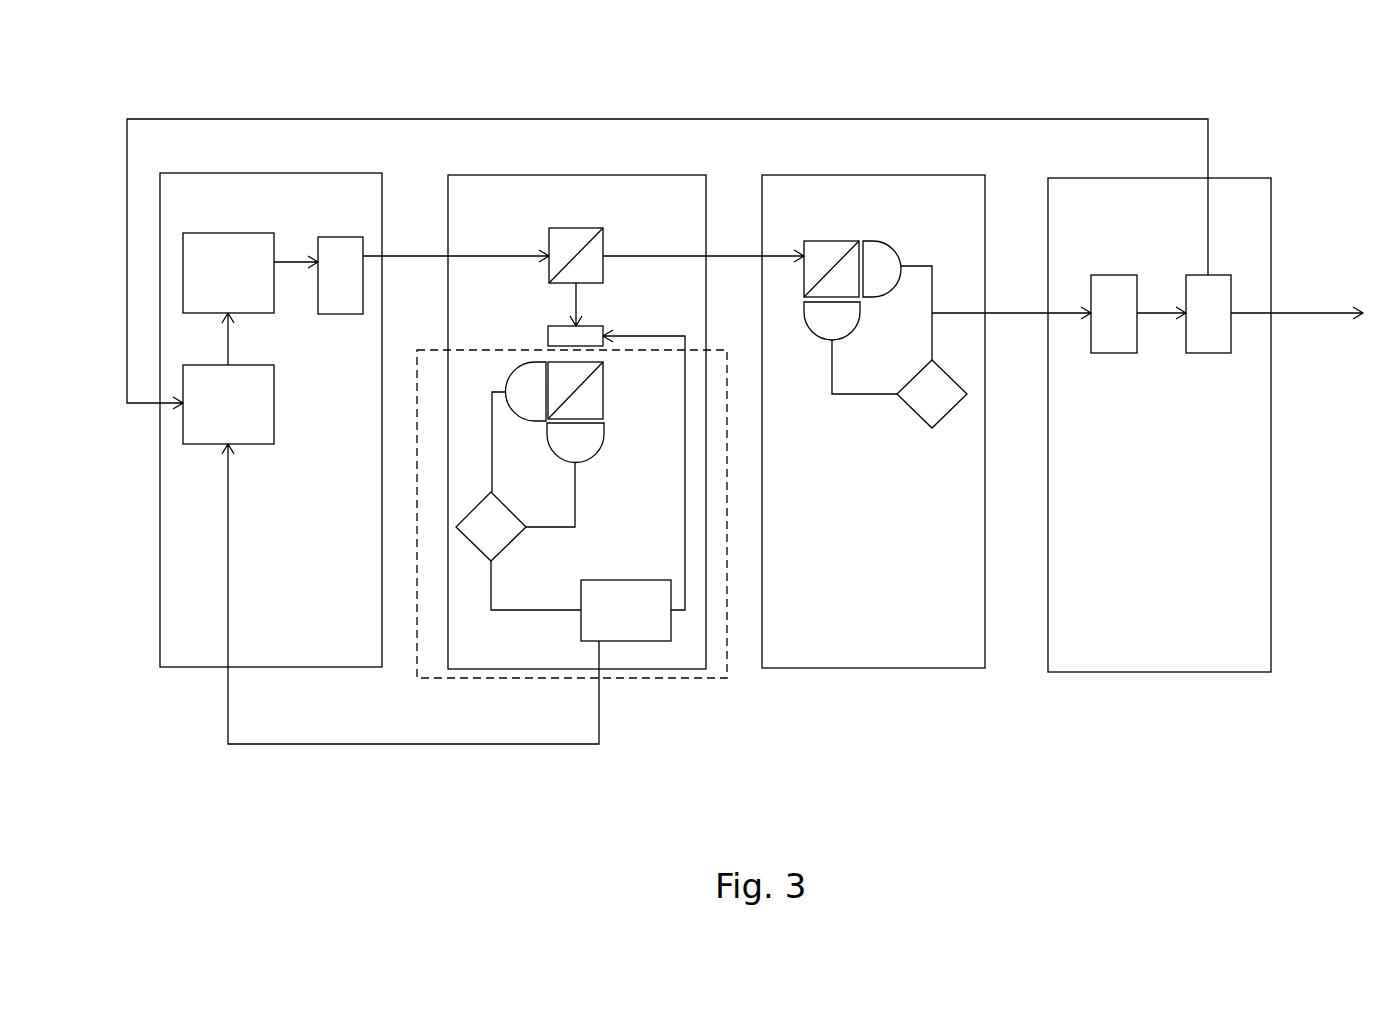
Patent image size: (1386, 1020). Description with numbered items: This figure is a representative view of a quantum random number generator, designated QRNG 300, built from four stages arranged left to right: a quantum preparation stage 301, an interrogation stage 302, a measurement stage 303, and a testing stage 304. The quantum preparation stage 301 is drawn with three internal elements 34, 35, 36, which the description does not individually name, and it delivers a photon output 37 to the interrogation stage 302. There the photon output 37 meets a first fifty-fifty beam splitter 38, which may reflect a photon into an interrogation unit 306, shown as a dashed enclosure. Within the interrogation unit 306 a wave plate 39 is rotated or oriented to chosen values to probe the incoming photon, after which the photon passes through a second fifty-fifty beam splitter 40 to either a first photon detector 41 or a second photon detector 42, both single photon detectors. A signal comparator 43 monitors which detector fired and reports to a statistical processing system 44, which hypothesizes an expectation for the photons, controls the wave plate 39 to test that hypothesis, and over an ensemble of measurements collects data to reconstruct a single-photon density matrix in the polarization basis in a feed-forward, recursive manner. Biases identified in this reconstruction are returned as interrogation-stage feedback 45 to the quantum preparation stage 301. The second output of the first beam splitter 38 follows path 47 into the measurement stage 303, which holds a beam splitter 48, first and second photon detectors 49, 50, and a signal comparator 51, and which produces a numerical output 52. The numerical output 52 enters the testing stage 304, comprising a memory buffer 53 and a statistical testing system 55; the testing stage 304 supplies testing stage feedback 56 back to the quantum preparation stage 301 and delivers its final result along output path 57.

The QRNG 300 is at (1244, 103).
The quantum preparation stage 301 is at (183, 667).
The interrogation stage 302 is at (642, 669).
The measurement stage 303 is at (883, 668).
The testing stage 304 is at (1127, 672).
The interrogation unit 306 is at (712, 678).
The source block 34 is at (212, 233).
The modulator block 35 is at (331, 237).
The control block 36 is at (274, 412).
The photon output 37 is at (395, 256).
The first 50-50 beam splitter 38 is at (565, 228).
The wave plate 39 is at (548, 340).
The second 50-50 beam splitter 40 is at (603, 393).
The first photon detector 41 is at (508, 380).
The second photon detector 42 is at (600, 452).
The signal comparator 43 is at (462, 520).
The statistical processing system 44 is at (637, 580).
The interrogation-stage feedback 45 is at (373, 744).
The signal path 47 is at (720, 256).
The beam splitter 48 is at (818, 241).
The first photon detector 49 is at (883, 241).
The second photon detector 50 is at (803, 306).
The signal comparator 51 is at (940, 417).
The numerical output 52 is at (996, 313).
The memory buffer 53 is at (1117, 353).
The statistical testing system 55 is at (1213, 353).
The feedback path 56 is at (595, 119).
The output path 57 is at (1290, 313).